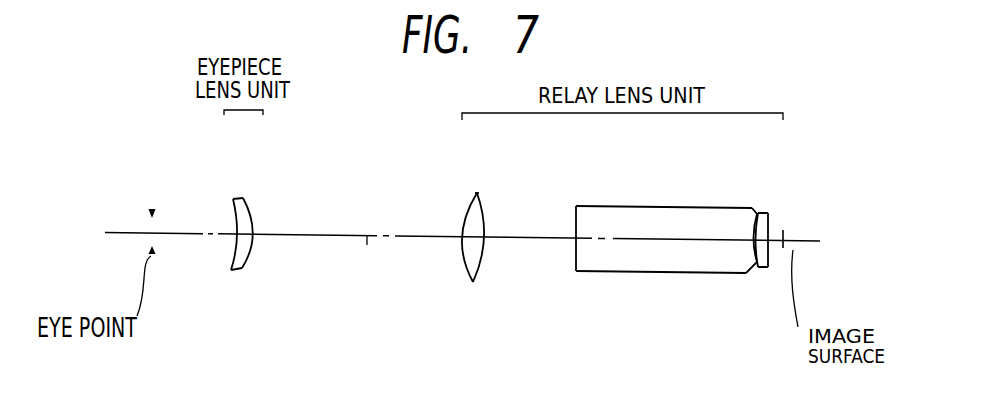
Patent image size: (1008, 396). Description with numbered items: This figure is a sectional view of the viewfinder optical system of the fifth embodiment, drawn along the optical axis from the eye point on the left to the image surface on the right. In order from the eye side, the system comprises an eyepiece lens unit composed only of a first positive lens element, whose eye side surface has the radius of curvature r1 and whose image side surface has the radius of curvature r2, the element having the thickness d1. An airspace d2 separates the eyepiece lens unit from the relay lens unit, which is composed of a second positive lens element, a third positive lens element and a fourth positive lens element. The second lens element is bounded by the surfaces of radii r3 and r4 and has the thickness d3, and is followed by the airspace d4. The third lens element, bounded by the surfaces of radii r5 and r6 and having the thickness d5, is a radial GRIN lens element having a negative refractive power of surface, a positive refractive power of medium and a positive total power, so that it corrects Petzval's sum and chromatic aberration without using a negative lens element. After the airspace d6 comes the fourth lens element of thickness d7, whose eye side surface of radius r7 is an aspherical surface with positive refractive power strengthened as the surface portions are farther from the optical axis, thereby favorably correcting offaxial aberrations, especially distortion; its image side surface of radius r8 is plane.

The radius of curvature of eye side surface of first lens element r1 is at (234, 204).
The radius of curvature of image side surface of first lens element r2 is at (247, 198).
The radius of curvature of eye side surface of second lens element r3 is at (468, 205).
The radius of curvature of image side surface of second lens element r4 is at (483, 202).
The radius of curvature of eye side surface of third lens element r5 is at (576, 211).
The radius of curvature of image side surface of third lens element r6 is at (755, 213).
The radius of curvature of eye side surface of fourth lens element r7 is at (767, 212).
The radius of curvature of image side surface of fourth lens element r8 is at (773, 214).
The thickness of first lens element d1 is at (237, 270).
The airspace between first and second lens elements d2 is at (367, 245).
The thickness of second lens element d3 is at (476, 240).
The airspace between second and third lens elements d4 is at (530, 238).
The thickness of third lens element d5 is at (676, 243).
The airspace between third and fourth lens elements d6 is at (748, 274).
The thickness of fourth lens element d7 is at (767, 268).